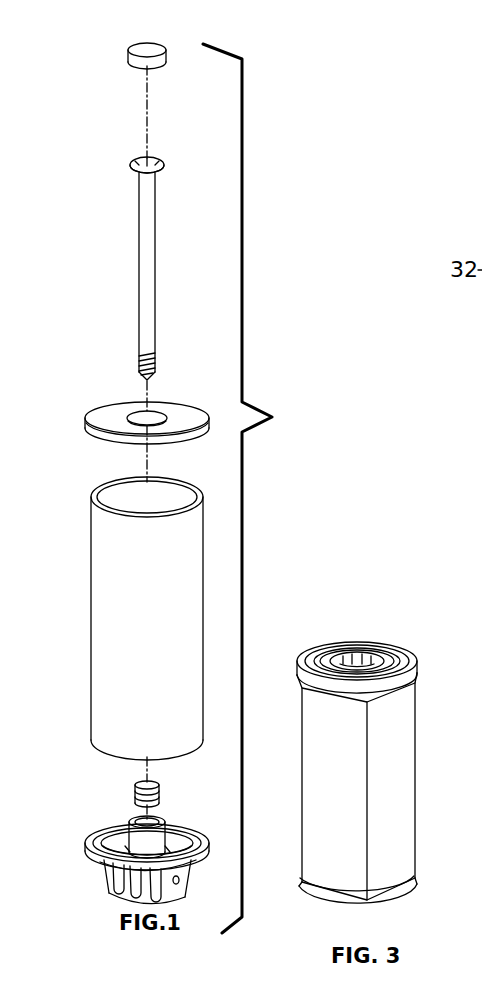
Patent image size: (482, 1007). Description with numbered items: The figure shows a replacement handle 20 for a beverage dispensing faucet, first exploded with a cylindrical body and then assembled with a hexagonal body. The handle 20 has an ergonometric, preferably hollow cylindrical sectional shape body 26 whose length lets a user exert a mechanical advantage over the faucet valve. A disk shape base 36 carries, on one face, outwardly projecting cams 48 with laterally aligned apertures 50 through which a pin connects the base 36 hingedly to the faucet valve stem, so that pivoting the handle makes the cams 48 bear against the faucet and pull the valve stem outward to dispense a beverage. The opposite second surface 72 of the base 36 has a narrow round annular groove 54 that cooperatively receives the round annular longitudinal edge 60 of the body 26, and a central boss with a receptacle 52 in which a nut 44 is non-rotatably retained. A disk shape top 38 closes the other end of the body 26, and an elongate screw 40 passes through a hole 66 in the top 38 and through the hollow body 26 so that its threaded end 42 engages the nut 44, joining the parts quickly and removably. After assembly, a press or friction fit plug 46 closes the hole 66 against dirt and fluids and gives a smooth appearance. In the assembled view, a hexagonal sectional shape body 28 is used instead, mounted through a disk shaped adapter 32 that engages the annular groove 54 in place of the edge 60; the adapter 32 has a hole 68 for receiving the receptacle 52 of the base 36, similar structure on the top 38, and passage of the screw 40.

In FIG. 1, the handle 20 is at (256, 488).
In FIG. 3, the handle 20 is at (378, 732).
In FIG. 1, the body 26 is at (119, 614).
In FIG. 3, the body 28 is at (415, 771).
In FIG. 3, the disk shaped adapter 32 is at (416, 661).
In FIG. 1, the base 36 is at (139, 896).
In FIG. 3, the base 36 is at (390, 917).
In FIG. 1, the top 38 is at (125, 409).
In FIG. 3, the top 38 is at (382, 650).
In FIG. 1, the screw 40 is at (147, 268).
In FIG. 1, the threaded end 42 is at (157, 347).
In FIG. 1, the nut 44 is at (133, 795).
In FIG. 1, the plug 46 is at (128, 51).
In FIG. 1, the cams 48 is at (155, 900).
In FIG. 1, the apertures 50 is at (180, 884).
In FIG. 1, the receptacle 52 is at (164, 822).
In FIG. 1, the annular groove 54 is at (140, 817).
In FIG. 3, the annular groove 54 is at (310, 651).
In FIG. 1, the annular longitudinal edge 60 is at (96, 494).
In FIG. 1, the hole 66 is at (160, 413).
In FIG. 3, the hole 68 is at (341, 660).
In FIG. 1, the second surface 72 is at (176, 836).